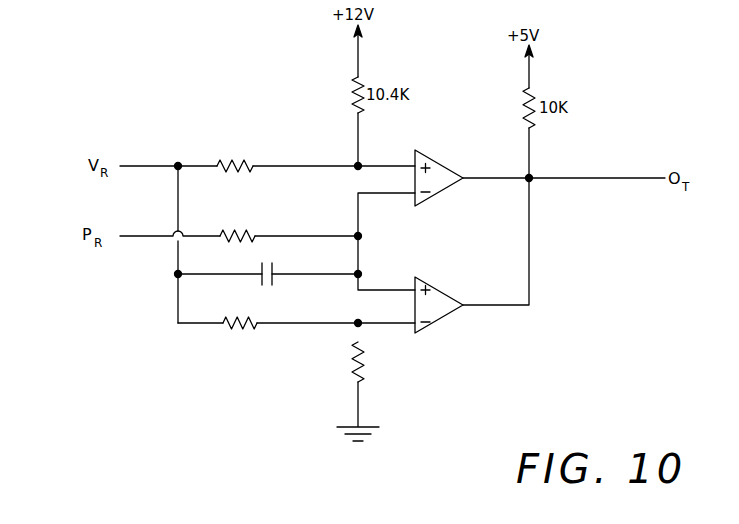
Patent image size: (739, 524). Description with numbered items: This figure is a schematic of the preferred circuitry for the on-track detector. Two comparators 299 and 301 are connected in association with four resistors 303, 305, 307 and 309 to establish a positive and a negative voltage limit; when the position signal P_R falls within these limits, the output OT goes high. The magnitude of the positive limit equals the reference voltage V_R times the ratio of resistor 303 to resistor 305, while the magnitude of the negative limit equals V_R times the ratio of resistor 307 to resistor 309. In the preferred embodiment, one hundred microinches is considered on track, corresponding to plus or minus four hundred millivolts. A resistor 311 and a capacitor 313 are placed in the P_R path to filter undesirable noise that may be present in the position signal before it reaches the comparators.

The comparator 299 is at (470, 138).
The comparator 301 is at (466, 273).
The resistor 303 is at (352, 93).
The resistor 305 is at (223, 160).
The resistor 307 is at (222, 327).
The resistor 309 is at (355, 368).
The resistor 311 is at (243, 243).
The capacitor 313 is at (276, 267).